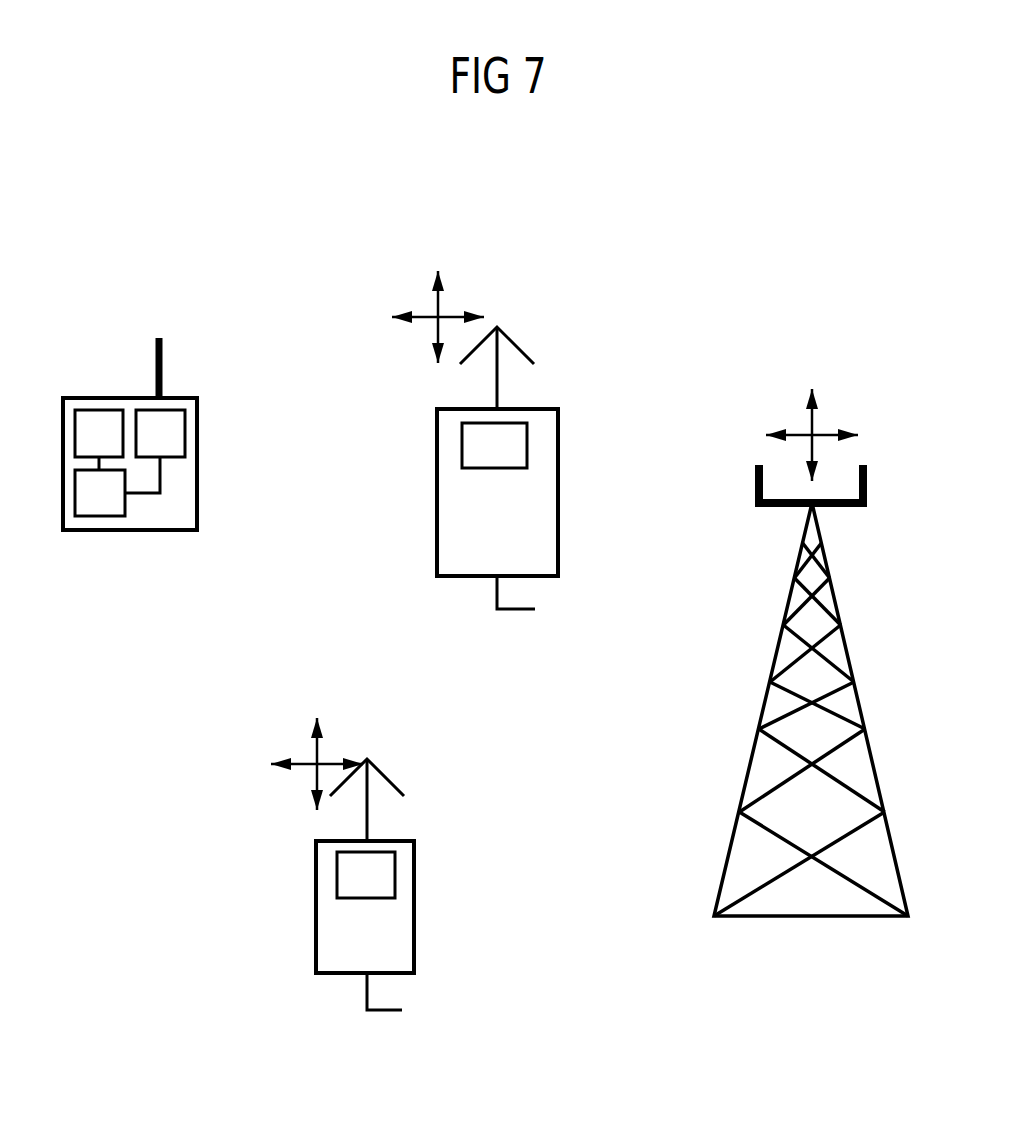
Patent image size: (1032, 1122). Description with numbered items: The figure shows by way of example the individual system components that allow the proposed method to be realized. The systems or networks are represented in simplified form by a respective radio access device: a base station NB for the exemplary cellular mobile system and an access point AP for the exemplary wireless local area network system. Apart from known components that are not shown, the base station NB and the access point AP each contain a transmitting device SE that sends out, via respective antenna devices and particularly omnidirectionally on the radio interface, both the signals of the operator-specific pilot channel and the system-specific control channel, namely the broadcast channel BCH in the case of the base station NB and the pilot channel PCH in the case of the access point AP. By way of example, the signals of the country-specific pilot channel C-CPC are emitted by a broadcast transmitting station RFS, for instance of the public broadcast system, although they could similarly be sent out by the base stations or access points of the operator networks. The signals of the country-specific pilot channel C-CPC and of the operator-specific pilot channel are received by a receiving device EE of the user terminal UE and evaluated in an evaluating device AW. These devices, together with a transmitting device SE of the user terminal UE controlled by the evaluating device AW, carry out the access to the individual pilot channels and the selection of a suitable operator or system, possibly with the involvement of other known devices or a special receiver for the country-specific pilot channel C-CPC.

The user terminal UE is at (130, 454).
The receiving device EE is at (99, 433).
The transmitting device SE is at (160, 433).
The evaluating device AW is at (100, 493).
The base station NB is at (497, 468).
The access point AP is at (365, 884).
The broadcast transmitting station RFS is at (811, 717).
The broadcast channel BCH is at (396, 292).
The pilot channel PCH is at (277, 740).
The country-specific pilot channel C-CPC is at (784, 429).